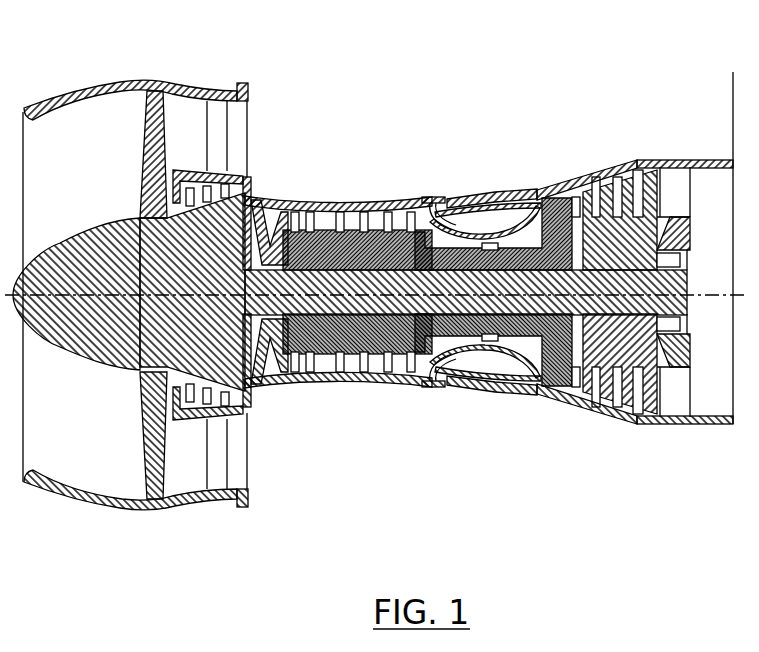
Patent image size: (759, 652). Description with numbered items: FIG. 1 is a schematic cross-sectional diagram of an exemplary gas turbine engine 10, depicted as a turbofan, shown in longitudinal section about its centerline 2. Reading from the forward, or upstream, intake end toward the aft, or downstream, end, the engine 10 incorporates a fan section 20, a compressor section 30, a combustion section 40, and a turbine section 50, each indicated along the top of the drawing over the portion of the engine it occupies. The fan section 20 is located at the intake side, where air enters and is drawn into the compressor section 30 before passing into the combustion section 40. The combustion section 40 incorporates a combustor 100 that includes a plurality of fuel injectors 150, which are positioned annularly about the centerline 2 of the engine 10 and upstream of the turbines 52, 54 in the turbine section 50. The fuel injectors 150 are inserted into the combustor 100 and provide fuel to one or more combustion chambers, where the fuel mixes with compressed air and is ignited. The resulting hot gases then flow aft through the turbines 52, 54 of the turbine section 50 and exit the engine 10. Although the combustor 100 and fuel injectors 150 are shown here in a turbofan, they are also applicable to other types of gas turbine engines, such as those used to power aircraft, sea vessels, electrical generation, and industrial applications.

The gas turbine engine 10 is at (67, 48).
The fan section 20 is at (145, 148).
The compressor section 30 is at (432, 194).
The combustion section 40 is at (535, 190).
The turbine section 50 is at (733, 78).
The turbine 52 is at (547, 184).
The turbine 54 is at (632, 155).
The combustor 100 is at (470, 176).
The fuel injector 150 is at (440, 188).
The centerline 2 is at (701, 291).